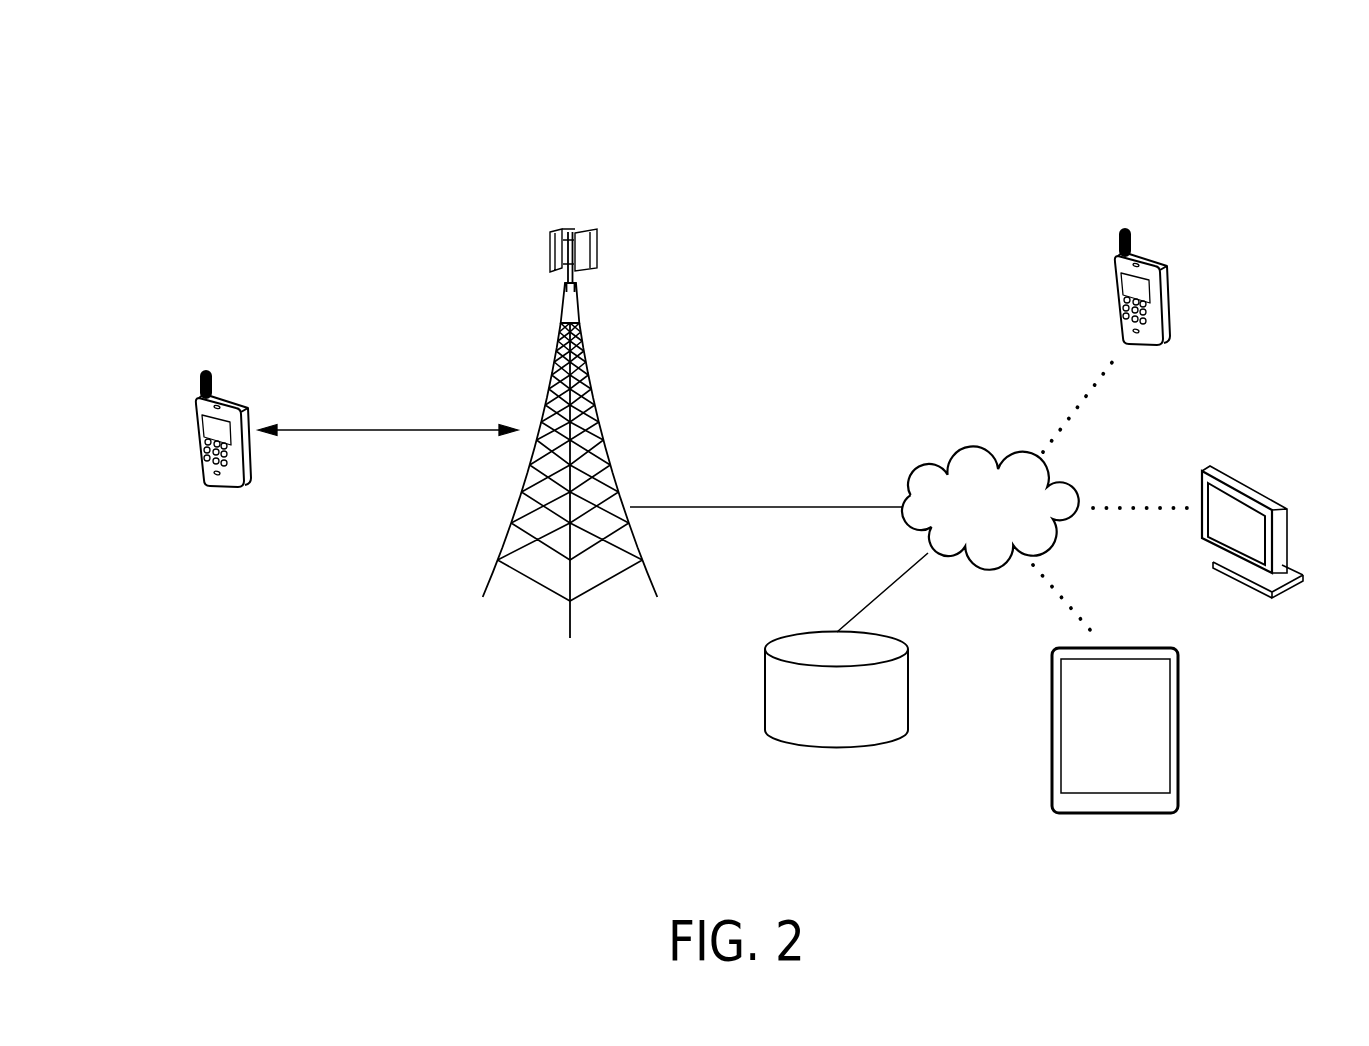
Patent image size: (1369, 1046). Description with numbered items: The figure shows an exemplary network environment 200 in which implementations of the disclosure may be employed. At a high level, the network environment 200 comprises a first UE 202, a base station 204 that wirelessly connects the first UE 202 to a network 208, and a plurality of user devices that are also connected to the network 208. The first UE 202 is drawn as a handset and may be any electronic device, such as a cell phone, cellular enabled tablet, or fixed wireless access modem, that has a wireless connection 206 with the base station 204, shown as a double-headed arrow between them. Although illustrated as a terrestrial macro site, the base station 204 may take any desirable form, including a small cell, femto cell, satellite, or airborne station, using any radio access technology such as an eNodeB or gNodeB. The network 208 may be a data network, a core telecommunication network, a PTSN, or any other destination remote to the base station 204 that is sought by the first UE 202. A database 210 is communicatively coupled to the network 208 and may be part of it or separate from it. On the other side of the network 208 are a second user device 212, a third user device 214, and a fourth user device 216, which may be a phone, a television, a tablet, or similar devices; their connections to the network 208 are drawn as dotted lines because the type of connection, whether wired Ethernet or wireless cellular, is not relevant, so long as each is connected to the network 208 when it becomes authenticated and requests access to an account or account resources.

The network environment 200 is at (257, 101).
The first UE 202 is at (216, 488).
The base station 204 is at (621, 217).
The wireless connection 206 is at (388, 430).
The network 208 is at (969, 448).
The database 210 is at (811, 746).
The second user device 212 is at (1143, 257).
The third user device 214 is at (1252, 484).
The fourth user device 216 is at (1120, 814).